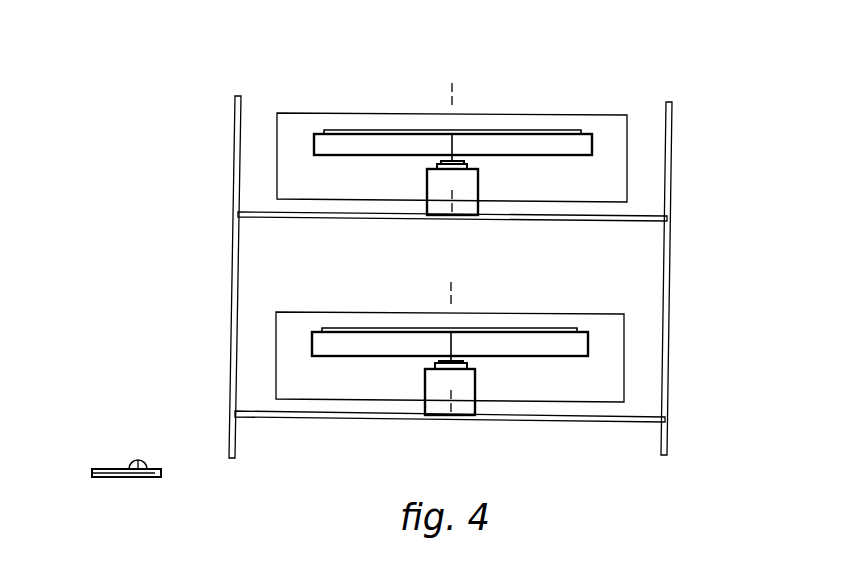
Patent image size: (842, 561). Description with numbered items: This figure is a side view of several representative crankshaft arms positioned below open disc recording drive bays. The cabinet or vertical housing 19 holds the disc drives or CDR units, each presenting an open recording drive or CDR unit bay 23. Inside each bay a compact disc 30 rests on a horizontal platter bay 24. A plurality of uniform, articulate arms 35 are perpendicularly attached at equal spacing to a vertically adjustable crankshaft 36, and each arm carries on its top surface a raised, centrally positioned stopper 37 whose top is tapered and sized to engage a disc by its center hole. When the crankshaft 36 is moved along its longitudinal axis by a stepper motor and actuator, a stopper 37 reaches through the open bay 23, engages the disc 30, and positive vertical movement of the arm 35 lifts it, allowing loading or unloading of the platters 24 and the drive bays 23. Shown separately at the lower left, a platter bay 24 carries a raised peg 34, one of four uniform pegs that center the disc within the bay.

The vertical housing 19 is at (450, 294).
The CDR unit bay 23 is at (298, 183).
The platter bay 24 is at (120, 476).
The compact disc 30 is at (378, 128).
The raised peg 34 is at (135, 460).
The articulate arm 35 is at (522, 420).
The crankshaft 36 is at (669, 300).
The stopper 37 is at (463, 188).